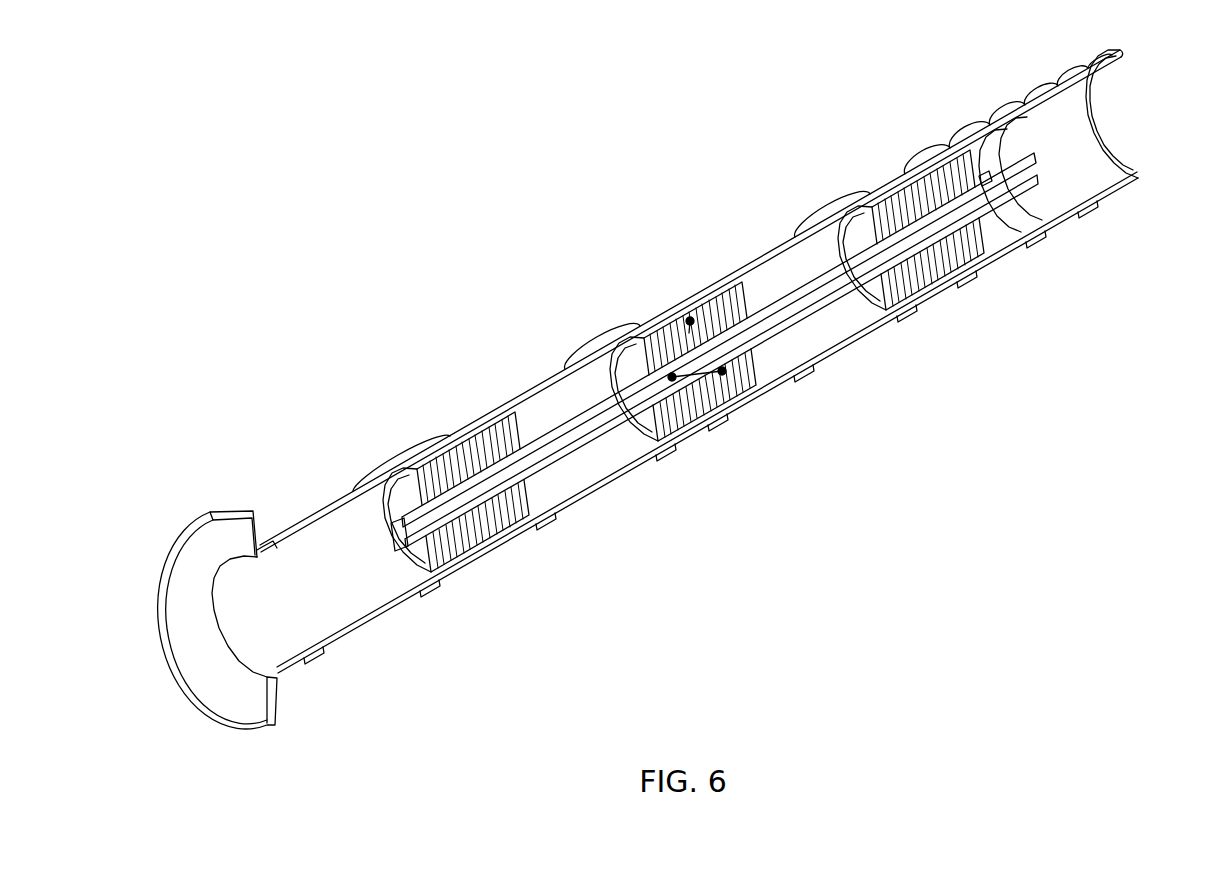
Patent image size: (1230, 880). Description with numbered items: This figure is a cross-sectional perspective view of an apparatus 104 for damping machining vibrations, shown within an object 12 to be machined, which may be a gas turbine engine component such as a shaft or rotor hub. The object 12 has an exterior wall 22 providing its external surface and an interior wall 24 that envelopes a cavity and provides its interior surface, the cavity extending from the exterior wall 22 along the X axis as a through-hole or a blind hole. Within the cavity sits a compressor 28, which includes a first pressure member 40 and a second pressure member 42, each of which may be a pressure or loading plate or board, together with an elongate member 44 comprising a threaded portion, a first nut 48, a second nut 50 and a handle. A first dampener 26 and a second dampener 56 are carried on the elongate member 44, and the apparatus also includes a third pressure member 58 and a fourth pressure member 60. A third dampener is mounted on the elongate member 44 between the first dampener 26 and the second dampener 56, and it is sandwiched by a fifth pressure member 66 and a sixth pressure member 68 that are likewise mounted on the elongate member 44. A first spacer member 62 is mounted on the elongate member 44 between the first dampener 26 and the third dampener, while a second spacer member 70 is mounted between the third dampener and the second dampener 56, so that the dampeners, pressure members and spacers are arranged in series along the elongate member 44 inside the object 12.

The apparatus 104 is at (1155, 112).
The exterior wall 22 is at (1098, 57).
The object 12 is at (770, 236).
The interior wall 24 is at (1100, 166).
The compressor 28 is at (329, 608).
The spacer member 62 is at (818, 288).
The second spacer member 70 is at (588, 451).
The fourth pressure member 60 is at (513, 432).
The second dampener 56 is at (485, 532).
The third pressure member 58 is at (399, 503).
The second nut 50 is at (398, 551).
The sixth pressure member 68 is at (651, 420).
The fifth pressure member 66 is at (733, 283).
The first dampener 26 is at (906, 160).
The first pressure member 40 is at (973, 247).
The second pressure member 42 is at (870, 290).
The elongate member 44 is at (1010, 193).
The first nut 48 is at (983, 173).